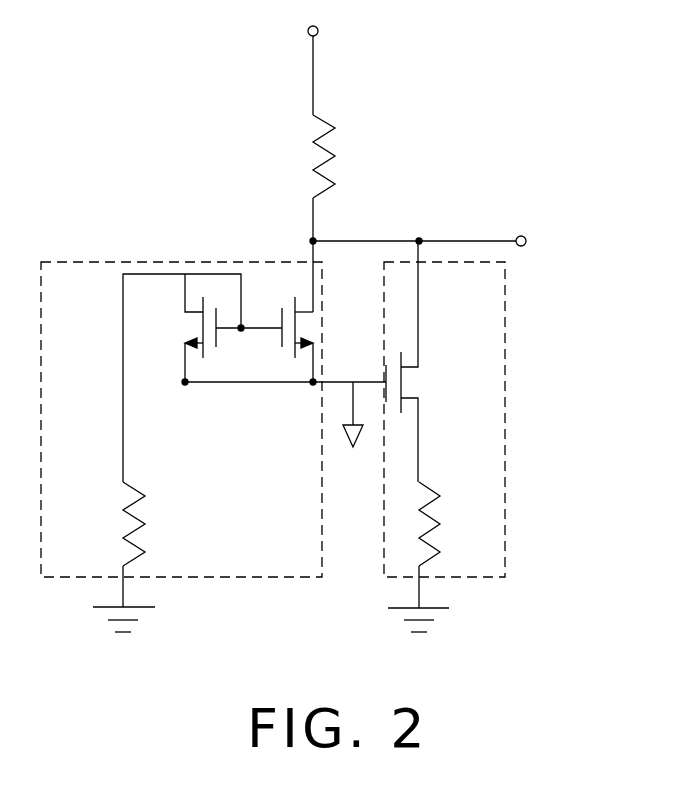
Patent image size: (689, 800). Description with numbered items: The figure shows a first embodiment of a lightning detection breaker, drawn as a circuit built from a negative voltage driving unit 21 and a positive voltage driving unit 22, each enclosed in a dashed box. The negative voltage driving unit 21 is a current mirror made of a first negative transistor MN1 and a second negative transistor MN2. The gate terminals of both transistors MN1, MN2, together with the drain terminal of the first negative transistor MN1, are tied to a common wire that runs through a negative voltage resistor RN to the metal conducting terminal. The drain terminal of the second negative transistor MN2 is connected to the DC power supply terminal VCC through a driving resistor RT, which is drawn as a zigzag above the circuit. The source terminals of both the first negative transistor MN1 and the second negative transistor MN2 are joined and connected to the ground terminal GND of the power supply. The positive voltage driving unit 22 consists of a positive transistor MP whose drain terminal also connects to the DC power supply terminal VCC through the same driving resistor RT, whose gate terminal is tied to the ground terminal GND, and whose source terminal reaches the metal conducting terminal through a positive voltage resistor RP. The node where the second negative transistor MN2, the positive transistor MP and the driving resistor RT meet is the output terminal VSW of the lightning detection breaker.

The negative voltage driving unit 21 is at (134, 262).
The positive voltage driving unit 22 is at (505, 432).
The driving resistor RT is at (342, 156).
The negative voltage resistor RN is at (148, 514).
The positive voltage resistor RP is at (441, 512).
The first negative transistor MN1 is at (187, 343).
The second negative transistor MN2 is at (293, 354).
The positive transistor MP is at (424, 361).
The DC power supply terminal VCC is at (337, 18).
The output terminal VSW is at (550, 240).
The ground terminal GND is at (349, 430).